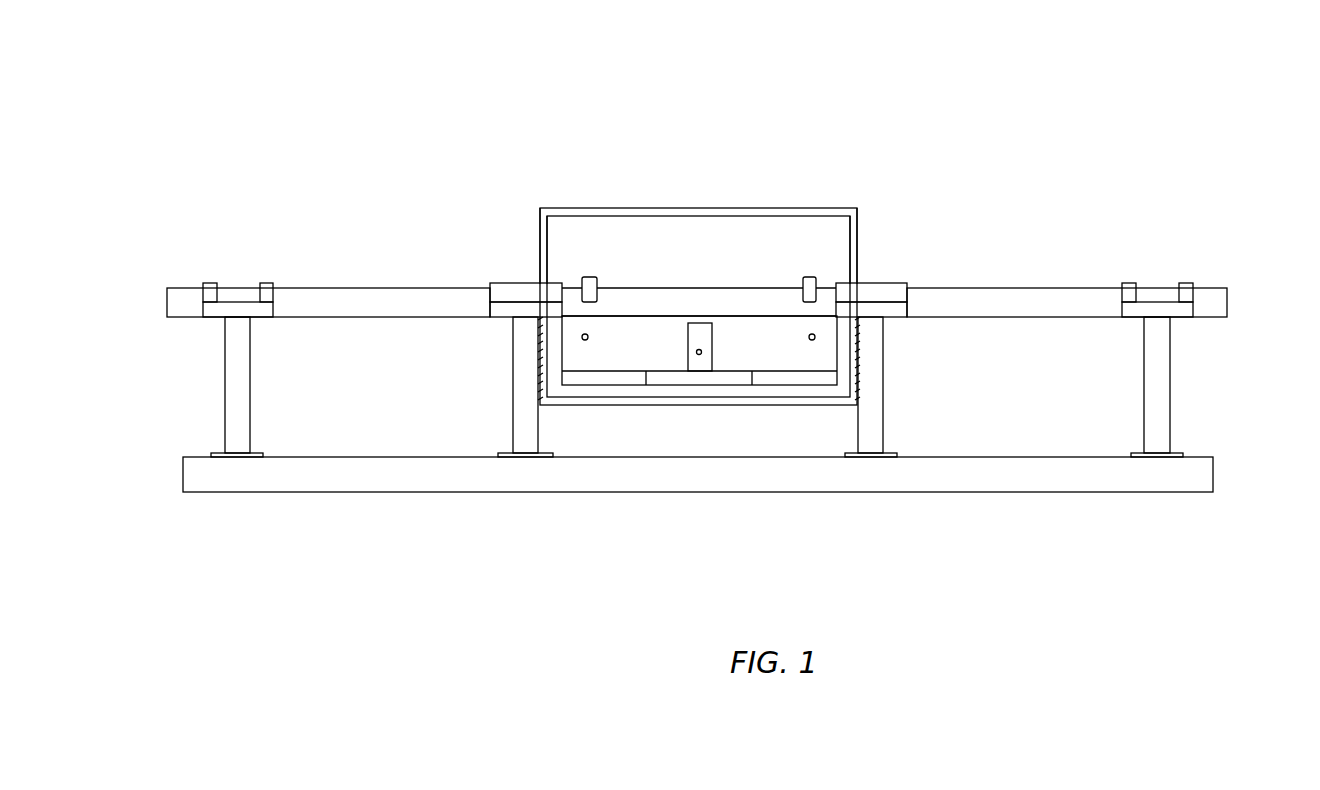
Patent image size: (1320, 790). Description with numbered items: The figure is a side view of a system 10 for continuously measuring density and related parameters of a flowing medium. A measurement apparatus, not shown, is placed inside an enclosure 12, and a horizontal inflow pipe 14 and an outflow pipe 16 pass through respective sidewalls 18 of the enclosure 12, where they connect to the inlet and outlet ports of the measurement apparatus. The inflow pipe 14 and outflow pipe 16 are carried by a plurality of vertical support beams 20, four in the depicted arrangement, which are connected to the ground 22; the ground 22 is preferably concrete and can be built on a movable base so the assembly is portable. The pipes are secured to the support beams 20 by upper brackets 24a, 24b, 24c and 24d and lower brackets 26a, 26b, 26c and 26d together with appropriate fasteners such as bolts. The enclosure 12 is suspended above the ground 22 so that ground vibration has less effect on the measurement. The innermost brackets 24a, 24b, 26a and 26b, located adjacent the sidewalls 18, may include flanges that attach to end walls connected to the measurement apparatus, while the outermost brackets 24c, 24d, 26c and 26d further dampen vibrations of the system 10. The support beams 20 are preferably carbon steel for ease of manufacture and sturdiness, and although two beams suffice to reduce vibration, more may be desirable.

The system 10 is at (1251, 139).
The enclosure 12 is at (767, 207).
The inflow pipe 14 is at (367, 297).
The outflow pipe 16 is at (1078, 297).
The sidewalls 18 is at (540, 240).
The vertical support beams 20 is at (237, 423).
The ground 22 is at (358, 494).
The upper bracket 24a is at (509, 282).
The upper bracket 24b is at (898, 282).
The upper bracket 24c is at (264, 282).
The upper bracket 24d is at (1169, 282).
The lower bracket 26a is at (505, 321).
The lower bracket 26b is at (900, 321).
The lower bracket 26c is at (215, 321).
The lower bracket 26d is at (1186, 321).